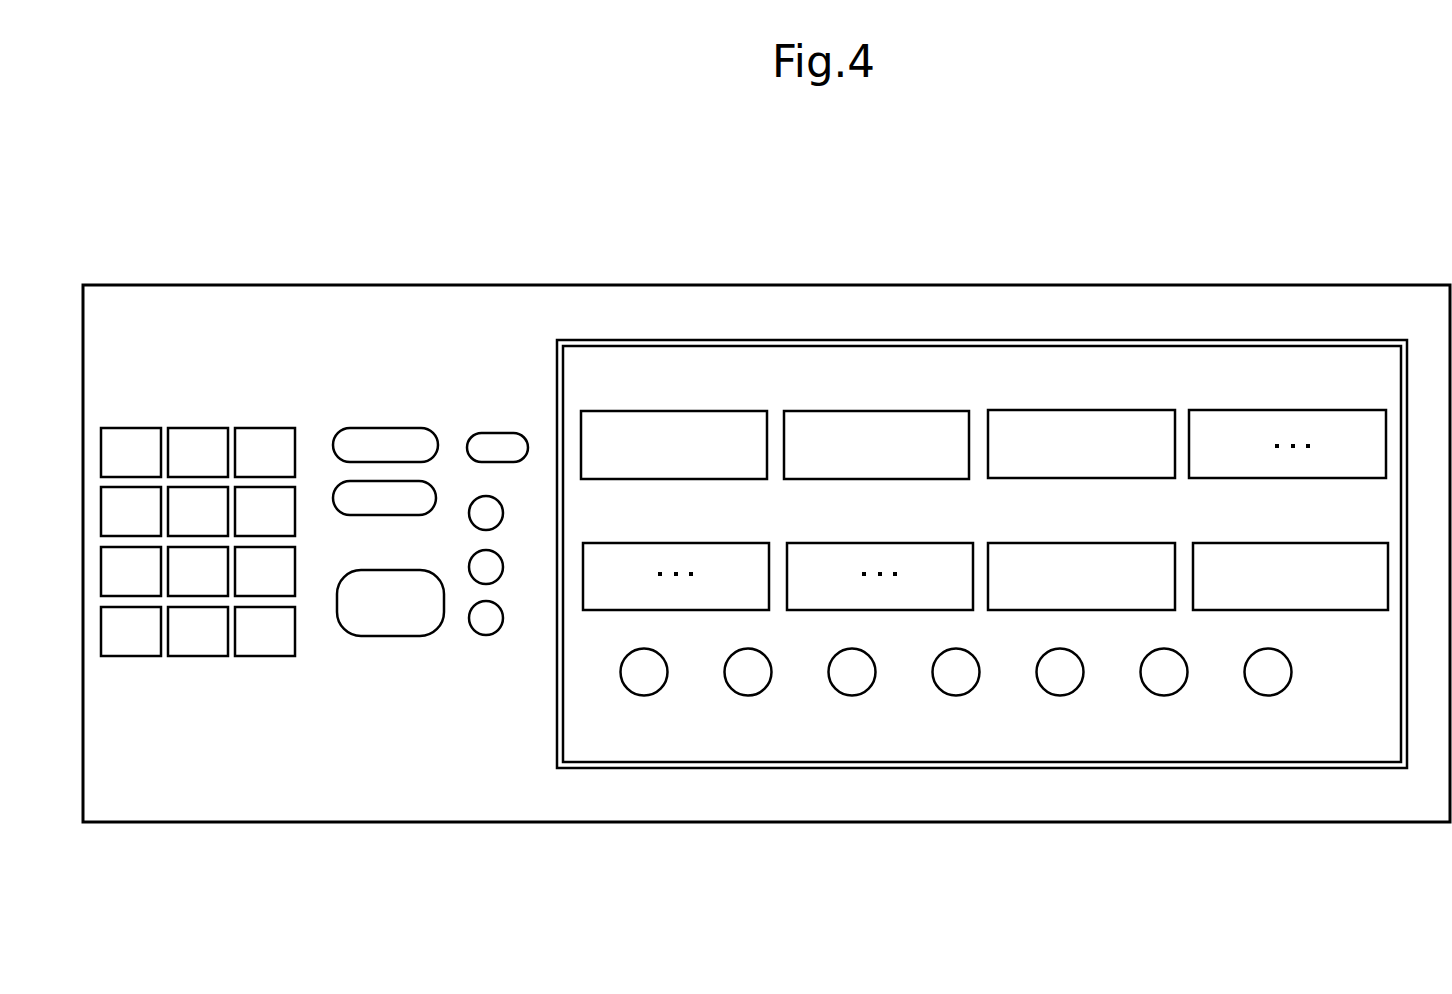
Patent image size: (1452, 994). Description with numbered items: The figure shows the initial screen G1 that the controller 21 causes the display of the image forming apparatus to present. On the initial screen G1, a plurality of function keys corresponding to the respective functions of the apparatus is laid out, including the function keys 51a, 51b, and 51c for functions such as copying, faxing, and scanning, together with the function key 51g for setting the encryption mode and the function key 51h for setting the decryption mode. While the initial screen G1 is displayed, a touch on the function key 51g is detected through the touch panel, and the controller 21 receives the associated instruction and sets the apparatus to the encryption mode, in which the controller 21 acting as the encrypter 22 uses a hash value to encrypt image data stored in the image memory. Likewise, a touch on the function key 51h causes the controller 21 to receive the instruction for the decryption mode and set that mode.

The encrypter 22 is at (1305, 285).
The controller 21 is at (1125, 340).
The function key 51a is at (688, 411).
The function key 51b is at (875, 411).
The function key 51c is at (1067, 410).
The function key for setting the encryption mode 51g is at (1100, 612).
The function key for setting the decryption mode 51h is at (1328, 612).
The initial screen G1 is at (838, 715).